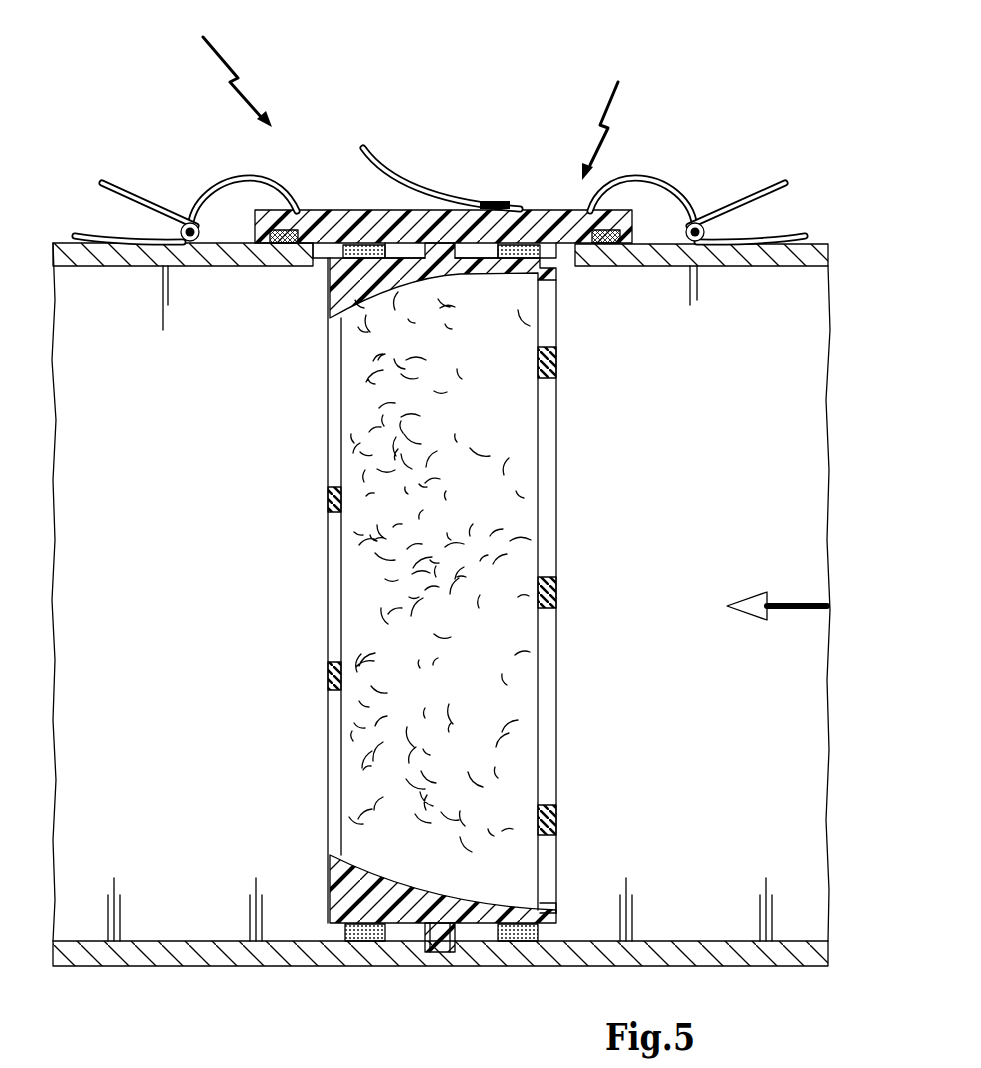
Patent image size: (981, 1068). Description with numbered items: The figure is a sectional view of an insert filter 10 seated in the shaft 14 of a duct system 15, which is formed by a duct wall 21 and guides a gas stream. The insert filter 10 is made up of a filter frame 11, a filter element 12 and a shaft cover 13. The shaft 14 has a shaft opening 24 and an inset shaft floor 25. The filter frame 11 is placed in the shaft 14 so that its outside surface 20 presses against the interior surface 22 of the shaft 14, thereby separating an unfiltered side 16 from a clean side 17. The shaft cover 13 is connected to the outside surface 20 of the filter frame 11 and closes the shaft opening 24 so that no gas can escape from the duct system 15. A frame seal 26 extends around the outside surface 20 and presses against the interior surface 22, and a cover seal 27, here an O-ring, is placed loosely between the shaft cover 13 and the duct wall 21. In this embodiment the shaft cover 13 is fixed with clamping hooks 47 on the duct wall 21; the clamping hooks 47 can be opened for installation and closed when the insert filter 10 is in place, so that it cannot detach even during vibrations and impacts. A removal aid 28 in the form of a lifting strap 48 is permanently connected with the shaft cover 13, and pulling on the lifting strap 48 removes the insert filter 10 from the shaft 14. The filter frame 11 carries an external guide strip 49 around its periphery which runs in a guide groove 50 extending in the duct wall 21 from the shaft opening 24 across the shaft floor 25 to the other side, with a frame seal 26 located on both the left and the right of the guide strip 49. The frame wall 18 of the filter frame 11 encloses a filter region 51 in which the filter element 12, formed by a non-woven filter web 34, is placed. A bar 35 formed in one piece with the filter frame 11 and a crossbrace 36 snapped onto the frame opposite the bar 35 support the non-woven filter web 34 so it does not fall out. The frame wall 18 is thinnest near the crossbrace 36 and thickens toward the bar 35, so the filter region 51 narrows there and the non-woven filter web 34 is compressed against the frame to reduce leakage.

The insert filter 10 is at (607, 119).
The filter frame 11 is at (318, 322).
The filter element 12 is at (525, 488).
The shaft cover 13 is at (320, 228).
The shaft 14 is at (320, 284).
The duct system 15 is at (229, 65).
The unfiltered side 16 is at (688, 557).
The clean side 17 is at (190, 557).
The frame wall 18 is at (560, 915).
The outside surface 20 is at (478, 258).
The duct wall 21 is at (762, 252).
The interior surface 22 is at (489, 928).
The shaft opening 24 is at (335, 255).
The shaft floor 25 is at (266, 955).
The frame seal 26 is at (364, 944).
The cover seal 27 is at (598, 246).
The removal aid 28 is at (392, 155).
The non-woven filter web 34 is at (512, 700).
The bar 35 is at (328, 492).
The crossbrace 36 is at (556, 363).
The clamping hooks 47 is at (235, 178).
The lifting strap 48 is at (428, 200).
The guide strip 49 is at (441, 952).
The guide groove 50 is at (428, 950).
The filter region 51 is at (362, 436).